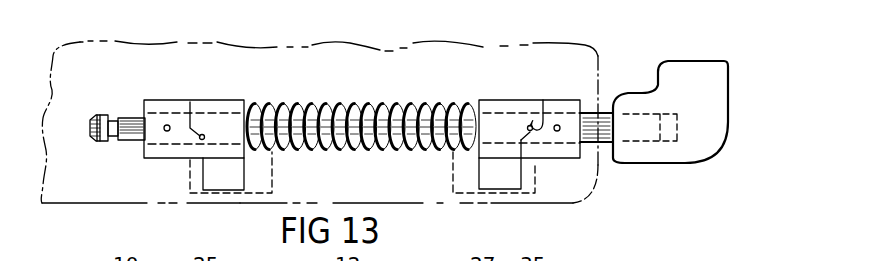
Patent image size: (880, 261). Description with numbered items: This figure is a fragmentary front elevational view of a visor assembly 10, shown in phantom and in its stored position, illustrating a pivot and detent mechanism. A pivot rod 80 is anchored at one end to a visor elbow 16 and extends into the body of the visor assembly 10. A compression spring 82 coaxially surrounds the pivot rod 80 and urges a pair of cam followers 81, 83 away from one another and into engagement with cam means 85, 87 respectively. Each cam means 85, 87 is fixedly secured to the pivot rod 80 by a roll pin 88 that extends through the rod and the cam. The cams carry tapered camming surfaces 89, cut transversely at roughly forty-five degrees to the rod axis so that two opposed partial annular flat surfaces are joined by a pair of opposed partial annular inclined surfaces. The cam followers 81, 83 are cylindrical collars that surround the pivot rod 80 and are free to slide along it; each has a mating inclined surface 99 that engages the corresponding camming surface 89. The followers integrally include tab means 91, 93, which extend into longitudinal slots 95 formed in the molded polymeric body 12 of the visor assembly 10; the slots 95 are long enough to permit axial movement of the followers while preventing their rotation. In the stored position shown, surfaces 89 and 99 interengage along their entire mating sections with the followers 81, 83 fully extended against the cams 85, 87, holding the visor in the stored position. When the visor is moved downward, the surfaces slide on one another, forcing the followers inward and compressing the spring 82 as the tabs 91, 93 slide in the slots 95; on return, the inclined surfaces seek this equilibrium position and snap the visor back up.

The visor assembly 10 is at (98, 204).
The molded polymeric body 12 is at (422, 184).
The visor elbow 16 is at (731, 113).
The pivot rod 80 is at (607, 112).
The cam follower 81 is at (230, 98).
The compression spring 82 is at (387, 103).
The cam follower 83 is at (490, 98).
The cam means 85 is at (160, 98).
The cam means 87 is at (563, 98).
The roll pin 88 is at (166, 131).
The inclined camming surface 89 is at (190, 102).
The tab means 91 is at (245, 176).
The tab means 93 is at (495, 179).
The longitudinal slot 95 is at (201, 190).
The mating inclined surface 99 is at (200, 140).